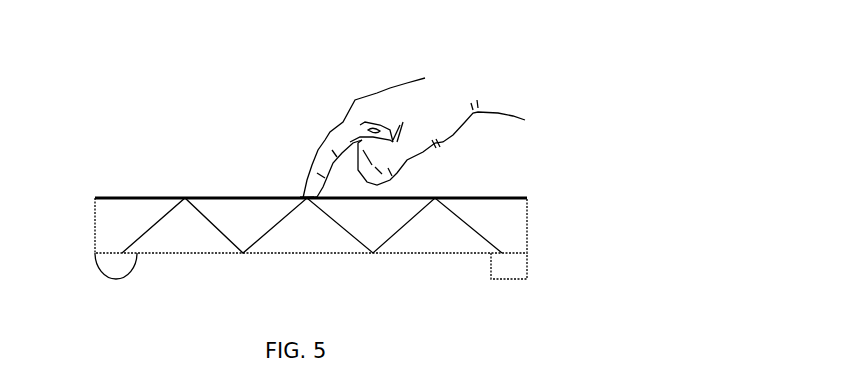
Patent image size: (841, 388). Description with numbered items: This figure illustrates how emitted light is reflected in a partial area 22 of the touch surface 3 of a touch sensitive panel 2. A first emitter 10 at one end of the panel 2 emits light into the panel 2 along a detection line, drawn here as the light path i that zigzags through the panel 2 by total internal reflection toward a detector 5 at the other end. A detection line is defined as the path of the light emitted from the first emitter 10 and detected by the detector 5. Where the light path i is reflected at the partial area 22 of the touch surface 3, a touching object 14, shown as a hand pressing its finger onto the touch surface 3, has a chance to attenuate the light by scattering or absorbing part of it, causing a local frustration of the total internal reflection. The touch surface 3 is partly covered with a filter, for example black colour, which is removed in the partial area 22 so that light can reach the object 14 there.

The panel 2 is at (130, 225).
The touch surface 3 is at (163, 197).
The light path i is at (217, 227).
The partial area 22 is at (283, 195).
The first emitter 10 is at (110, 265).
The detector 5 is at (543, 266).
The object 14 is at (448, 98).